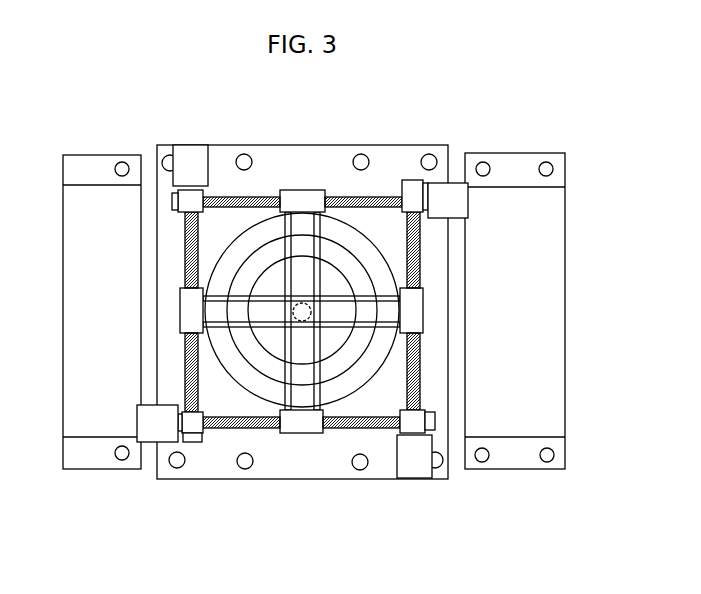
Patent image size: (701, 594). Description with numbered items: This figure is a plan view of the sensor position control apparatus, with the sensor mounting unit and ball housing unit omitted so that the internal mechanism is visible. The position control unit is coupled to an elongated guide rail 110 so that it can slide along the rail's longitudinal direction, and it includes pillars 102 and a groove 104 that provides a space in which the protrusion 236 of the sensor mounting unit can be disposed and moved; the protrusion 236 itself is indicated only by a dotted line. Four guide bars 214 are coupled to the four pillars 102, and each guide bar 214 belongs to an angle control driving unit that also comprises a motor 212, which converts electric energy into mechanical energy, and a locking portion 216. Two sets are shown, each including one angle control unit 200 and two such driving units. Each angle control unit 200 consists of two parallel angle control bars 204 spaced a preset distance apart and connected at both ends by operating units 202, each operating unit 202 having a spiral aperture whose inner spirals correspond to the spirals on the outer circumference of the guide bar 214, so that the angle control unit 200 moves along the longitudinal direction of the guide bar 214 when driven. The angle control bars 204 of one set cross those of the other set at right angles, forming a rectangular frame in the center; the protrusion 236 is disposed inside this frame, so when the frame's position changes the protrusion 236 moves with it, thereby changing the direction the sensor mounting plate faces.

The guide rail 110 is at (553, 263).
The pillar 102 is at (175, 193).
The groove 104 is at (268, 343).
The protrusion 236 is at (295, 317).
The angle control unit 200 is at (313, 535).
The operating unit 202 is at (295, 198).
The angle control bar 204 is at (363, 327).
The motor 212 is at (193, 157).
The guide bar 214 is at (255, 198).
The locking portion 216 is at (173, 205).